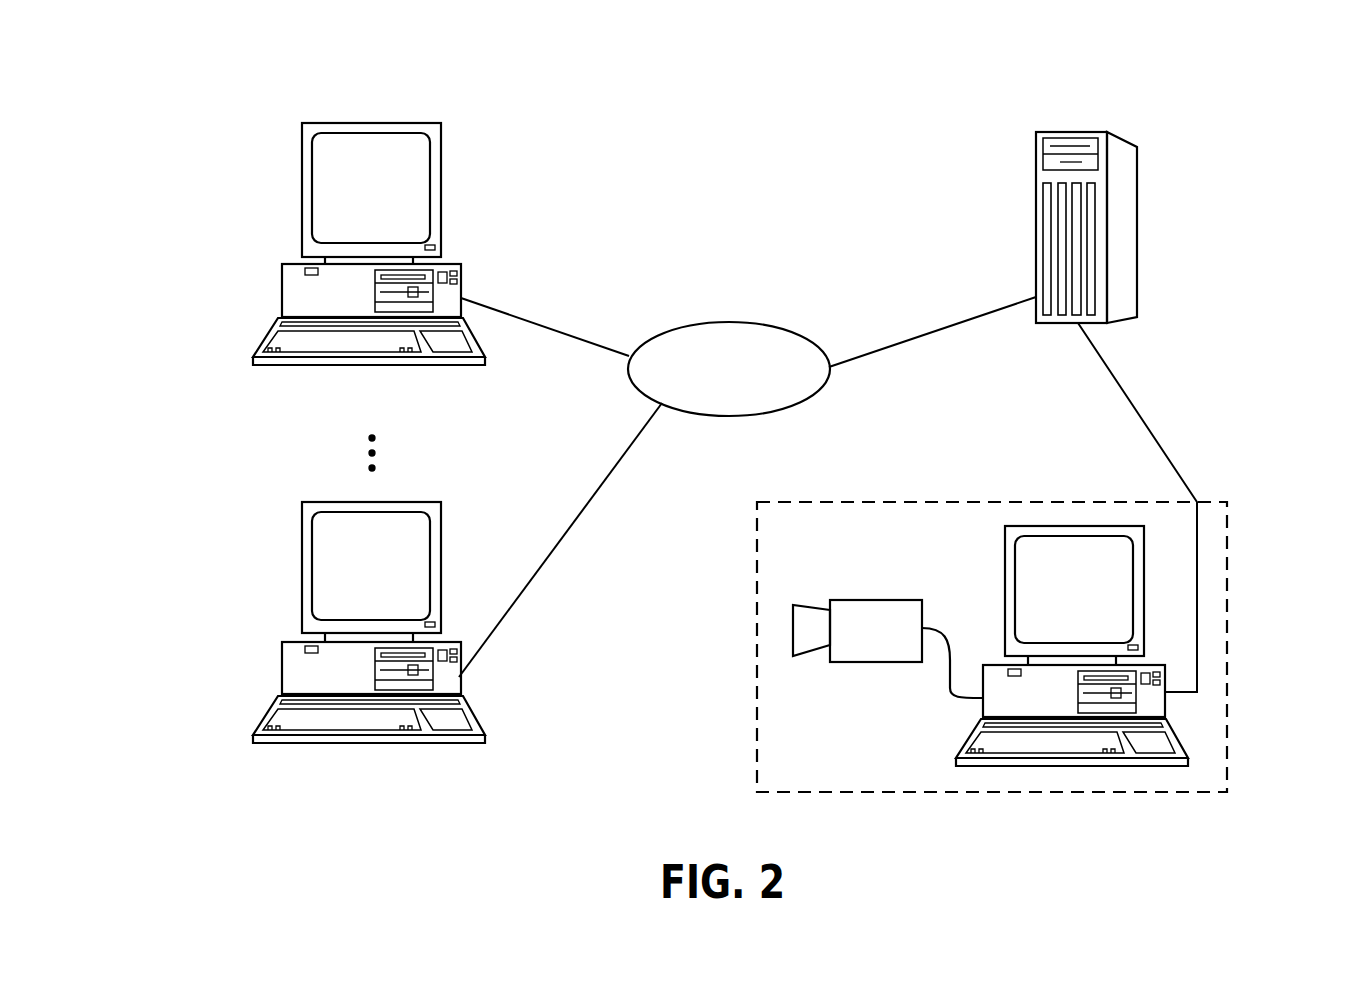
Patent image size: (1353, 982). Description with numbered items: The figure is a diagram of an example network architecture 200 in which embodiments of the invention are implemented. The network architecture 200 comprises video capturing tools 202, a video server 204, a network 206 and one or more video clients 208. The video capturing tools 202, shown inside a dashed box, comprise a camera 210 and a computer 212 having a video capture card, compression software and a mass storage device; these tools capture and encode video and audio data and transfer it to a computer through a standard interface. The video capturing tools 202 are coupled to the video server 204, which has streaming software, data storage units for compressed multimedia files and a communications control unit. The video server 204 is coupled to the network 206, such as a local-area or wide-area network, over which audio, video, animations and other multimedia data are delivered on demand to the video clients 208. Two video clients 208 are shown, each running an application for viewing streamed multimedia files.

The network architecture 200 is at (766, 98).
The video capturing tools 202 is at (1228, 621).
The video server 204 is at (1138, 218).
The network 206 is at (723, 322).
The video clients 208 is at (302, 187).
The camera 210 is at (874, 600).
The computer 212 is at (1005, 551).